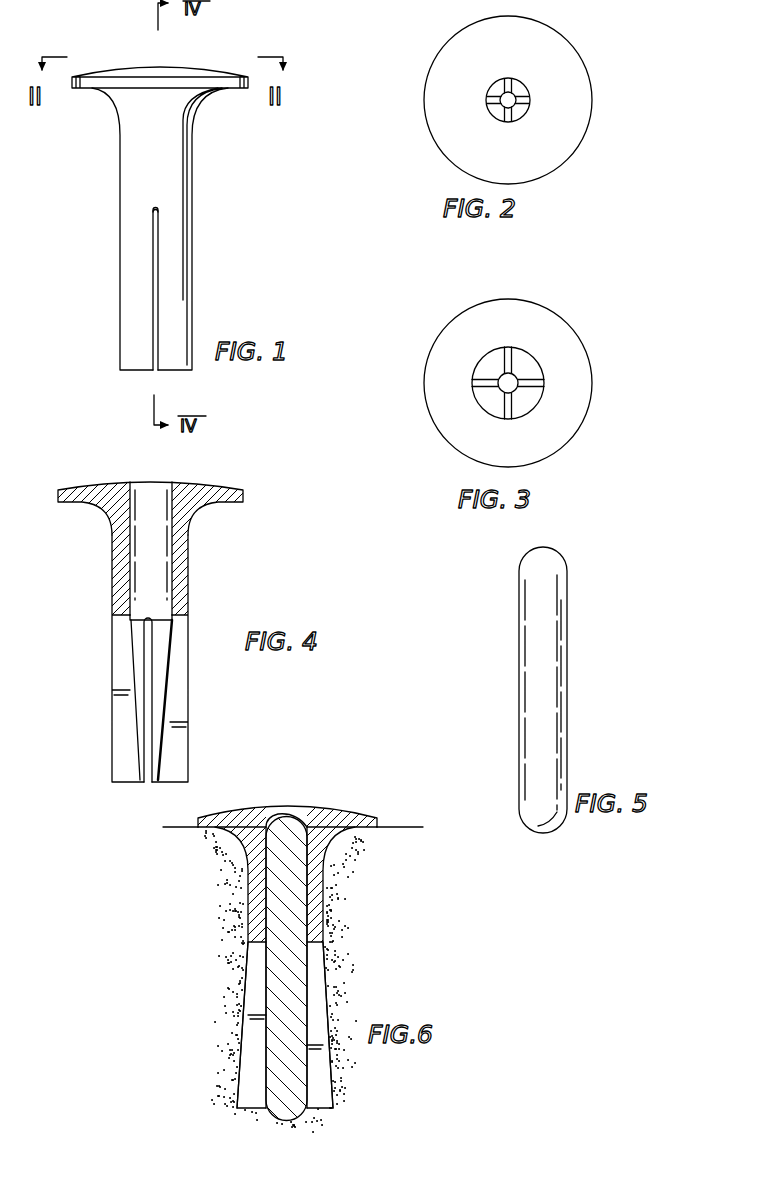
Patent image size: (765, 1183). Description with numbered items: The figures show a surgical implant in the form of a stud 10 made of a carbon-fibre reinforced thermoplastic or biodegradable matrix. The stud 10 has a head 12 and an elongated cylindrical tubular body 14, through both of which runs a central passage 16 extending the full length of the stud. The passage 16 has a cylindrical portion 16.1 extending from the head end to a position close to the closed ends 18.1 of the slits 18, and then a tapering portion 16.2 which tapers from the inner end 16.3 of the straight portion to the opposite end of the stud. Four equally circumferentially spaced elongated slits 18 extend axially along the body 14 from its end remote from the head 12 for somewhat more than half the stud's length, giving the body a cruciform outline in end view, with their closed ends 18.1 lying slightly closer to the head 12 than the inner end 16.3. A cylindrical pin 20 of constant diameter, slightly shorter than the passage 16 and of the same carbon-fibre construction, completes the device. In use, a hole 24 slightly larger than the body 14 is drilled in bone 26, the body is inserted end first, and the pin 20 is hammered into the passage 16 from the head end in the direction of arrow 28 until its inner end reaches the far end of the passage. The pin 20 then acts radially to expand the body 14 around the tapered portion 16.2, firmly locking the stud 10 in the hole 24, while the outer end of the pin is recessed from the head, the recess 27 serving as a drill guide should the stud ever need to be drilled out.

In FIG. 6, the stud 10 is at (364, 786).
In FIG. 1, the head 12 is at (183, 76).
In FIG. 2, the head 12 is at (575, 142).
In FIG. 3, the head 12 is at (573, 428).
In FIG. 4, the head 12 is at (202, 479).
In FIG. 6, the head 12 is at (215, 807).
In FIG. 1, the body 14 is at (116, 297).
In FIG. 3, the body 14 is at (529, 365).
In FIG. 4, the body 14 is at (101, 680).
In FIG. 6, the body 14 is at (229, 877).
In FIG. 2, the central passage 16 is at (537, 80).
In FIG. 3, the central passage 16 is at (498, 371).
In FIG. 4, the central passage 16 is at (152, 477).
In FIG. 6, the central passage 16 is at (300, 799).
In FIG. 4, the cylindrical portion 16.1 is at (126, 568).
In FIG. 4, the tapering portion 16.2 is at (128, 735).
In FIG. 4, the inner end 16.3 is at (151, 619).
In FIG. 1, the slits 18 is at (162, 313).
In FIG. 3, the slits 18 is at (509, 342).
In FIG. 4, the slits 18 is at (150, 678).
In FIG. 1, the closed ends 18.1 is at (153, 200).
In FIG. 4, the closed ends 18.1 is at (106, 613).
In FIG. 5, the pin 20 is at (547, 627).
In FIG. 6, the pin 20 is at (298, 882).
In FIG. 6, the hole 24 is at (231, 1024).
In FIG. 6, the bone 26 is at (403, 823).
In FIG. 6, the recess 27 is at (278, 807).
In FIG. 6, the arrow 28 is at (285, 790).